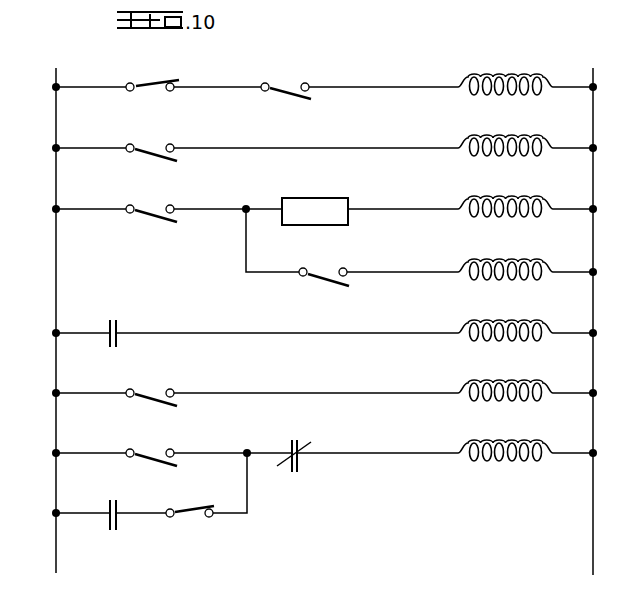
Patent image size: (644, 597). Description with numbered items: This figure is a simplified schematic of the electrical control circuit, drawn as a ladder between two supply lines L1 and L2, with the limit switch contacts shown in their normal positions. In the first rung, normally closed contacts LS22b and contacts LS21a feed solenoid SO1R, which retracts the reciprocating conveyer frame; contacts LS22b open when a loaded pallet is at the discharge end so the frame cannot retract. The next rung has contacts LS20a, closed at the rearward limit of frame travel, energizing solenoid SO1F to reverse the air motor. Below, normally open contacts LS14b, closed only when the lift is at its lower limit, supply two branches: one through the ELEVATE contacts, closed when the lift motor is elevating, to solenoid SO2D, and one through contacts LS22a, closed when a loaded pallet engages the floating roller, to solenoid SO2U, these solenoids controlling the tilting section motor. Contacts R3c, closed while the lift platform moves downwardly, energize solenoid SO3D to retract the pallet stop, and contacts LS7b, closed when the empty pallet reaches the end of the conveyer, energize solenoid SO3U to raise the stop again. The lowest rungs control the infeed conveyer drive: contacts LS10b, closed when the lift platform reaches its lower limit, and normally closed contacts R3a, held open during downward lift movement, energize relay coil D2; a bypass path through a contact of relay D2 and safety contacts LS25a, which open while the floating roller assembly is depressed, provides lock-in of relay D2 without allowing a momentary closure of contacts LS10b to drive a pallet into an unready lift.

The supply line L1 is at (56, 76).
The supply line L2 is at (593, 80).
The limit switch contacts LS22b is at (153, 83).
The limit switch contacts LS21a is at (287, 86).
The solenoid SO1R is at (524, 76).
The limit switch contacts LS20a is at (156, 150).
The solenoid SO1F is at (518, 128).
The limit switch contacts LS14b is at (156, 211).
The elevate contacts ELEVATE is at (315, 211).
The solenoid SO2D is at (525, 198).
The limit switch contacts LS22a is at (328, 275).
The solenoid SO2U is at (524, 261).
The relay contacts R3c is at (117, 321).
The solenoid SO3D is at (525, 322).
The limit switch contacts LS7b is at (155, 395).
The solenoid SO3U is at (524, 382).
The limit switch contacts LS10b is at (156, 455).
The relay contacts R3a is at (291, 446).
The relay coil D2 is at (516, 442).
The safety contacts LS25a is at (191, 511).